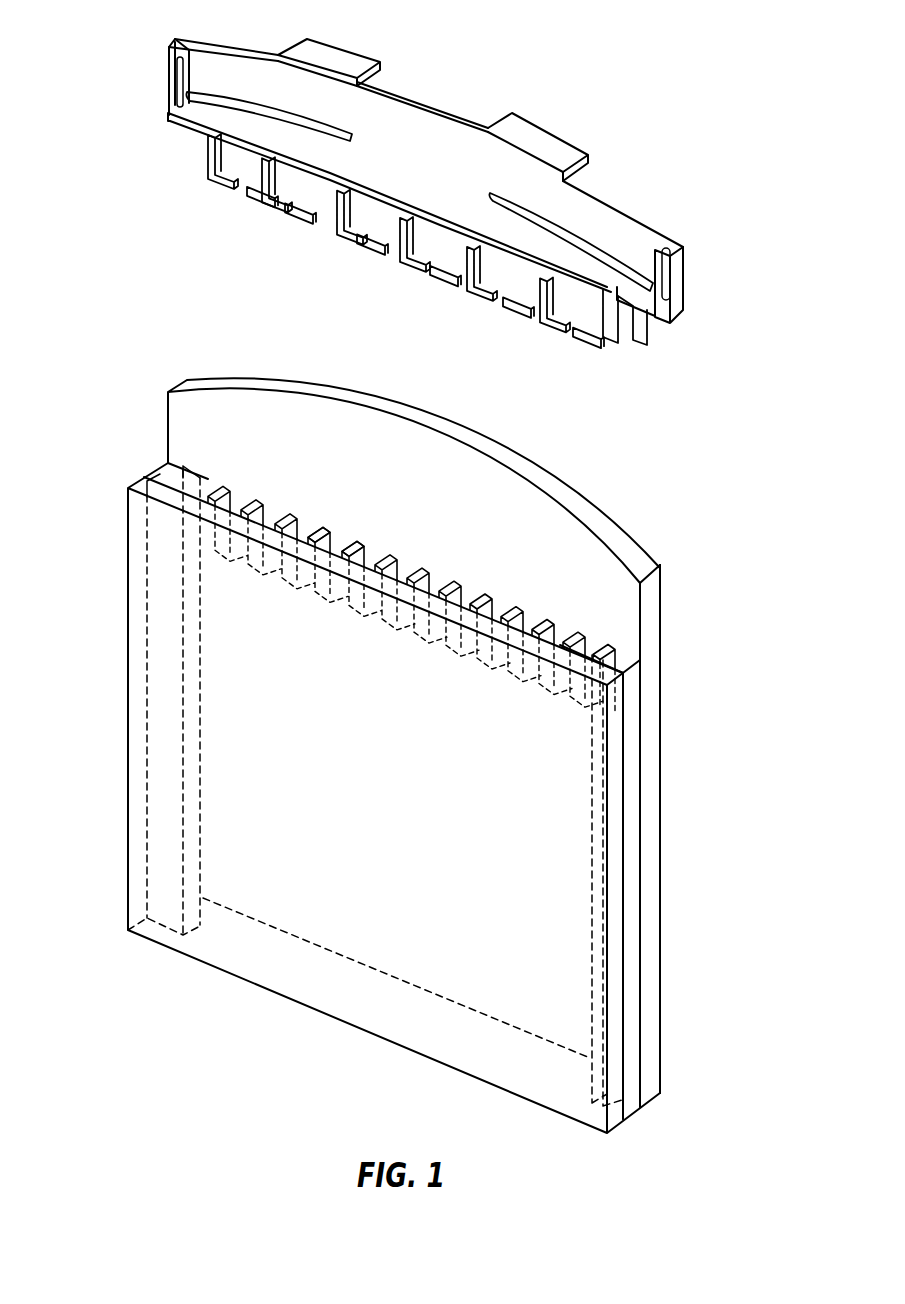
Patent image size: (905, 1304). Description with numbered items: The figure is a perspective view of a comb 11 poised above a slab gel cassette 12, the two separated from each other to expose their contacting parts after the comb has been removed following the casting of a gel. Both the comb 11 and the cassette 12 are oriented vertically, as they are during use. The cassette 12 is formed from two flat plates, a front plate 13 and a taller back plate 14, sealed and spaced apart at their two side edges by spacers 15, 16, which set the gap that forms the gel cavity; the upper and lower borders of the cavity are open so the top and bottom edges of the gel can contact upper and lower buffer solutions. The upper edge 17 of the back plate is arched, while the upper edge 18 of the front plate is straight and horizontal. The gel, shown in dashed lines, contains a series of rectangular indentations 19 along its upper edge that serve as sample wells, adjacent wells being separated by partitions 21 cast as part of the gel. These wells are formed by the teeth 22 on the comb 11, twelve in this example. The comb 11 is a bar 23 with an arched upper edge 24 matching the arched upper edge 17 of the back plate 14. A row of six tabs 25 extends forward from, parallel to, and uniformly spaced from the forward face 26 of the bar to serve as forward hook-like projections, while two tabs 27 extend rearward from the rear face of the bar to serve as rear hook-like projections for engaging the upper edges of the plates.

The comb 11 is at (710, 88).
The slab gel cassette 12 is at (681, 494).
The front plate 13 is at (615, 827).
The back plate 14 is at (648, 913).
The spacer 15 is at (162, 473).
The spacer 16 is at (632, 703).
The upper edge of the back plate 17 is at (533, 477).
The upper edge of the front plate 18 is at (583, 637).
The rectangular indentations 19 is at (510, 605).
The partitions 21 is at (375, 547).
The teeth 22 is at (547, 327).
The bar 23 is at (684, 248).
The arched upper edge 24 is at (428, 103).
The tabs 25 is at (318, 203).
The forward face 26 is at (410, 133).
The tabs 27 is at (533, 120).